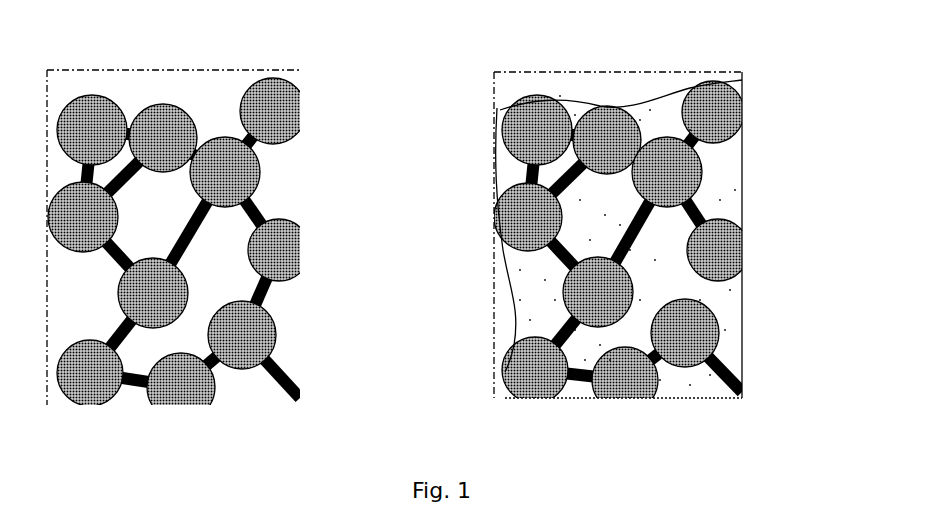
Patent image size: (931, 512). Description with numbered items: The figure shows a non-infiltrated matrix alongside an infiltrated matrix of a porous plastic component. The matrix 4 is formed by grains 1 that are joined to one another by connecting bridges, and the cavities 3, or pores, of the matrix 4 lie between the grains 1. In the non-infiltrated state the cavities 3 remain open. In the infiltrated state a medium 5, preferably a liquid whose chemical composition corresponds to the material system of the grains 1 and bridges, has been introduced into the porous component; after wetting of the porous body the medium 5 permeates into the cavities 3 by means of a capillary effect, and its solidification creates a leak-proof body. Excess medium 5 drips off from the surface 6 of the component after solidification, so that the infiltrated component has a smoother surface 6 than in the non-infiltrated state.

The grains 1 is at (280, 108).
The cavities 3 is at (228, 283).
The matrix 4 is at (202, 70).
The medium 5 is at (727, 177).
The surface 6 is at (520, 318).